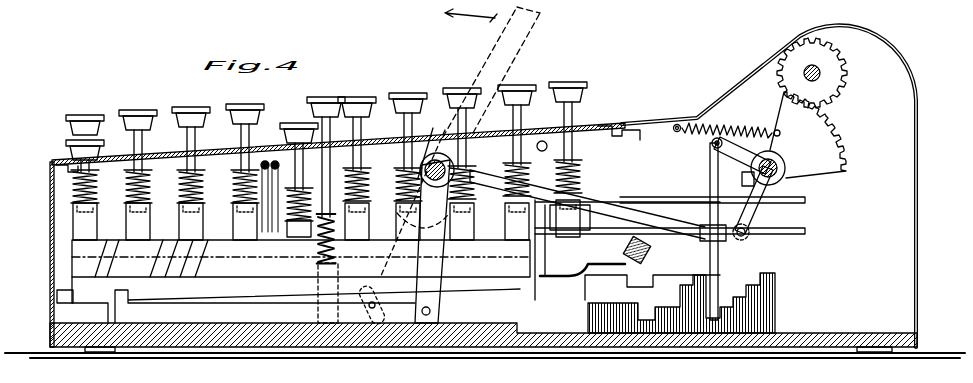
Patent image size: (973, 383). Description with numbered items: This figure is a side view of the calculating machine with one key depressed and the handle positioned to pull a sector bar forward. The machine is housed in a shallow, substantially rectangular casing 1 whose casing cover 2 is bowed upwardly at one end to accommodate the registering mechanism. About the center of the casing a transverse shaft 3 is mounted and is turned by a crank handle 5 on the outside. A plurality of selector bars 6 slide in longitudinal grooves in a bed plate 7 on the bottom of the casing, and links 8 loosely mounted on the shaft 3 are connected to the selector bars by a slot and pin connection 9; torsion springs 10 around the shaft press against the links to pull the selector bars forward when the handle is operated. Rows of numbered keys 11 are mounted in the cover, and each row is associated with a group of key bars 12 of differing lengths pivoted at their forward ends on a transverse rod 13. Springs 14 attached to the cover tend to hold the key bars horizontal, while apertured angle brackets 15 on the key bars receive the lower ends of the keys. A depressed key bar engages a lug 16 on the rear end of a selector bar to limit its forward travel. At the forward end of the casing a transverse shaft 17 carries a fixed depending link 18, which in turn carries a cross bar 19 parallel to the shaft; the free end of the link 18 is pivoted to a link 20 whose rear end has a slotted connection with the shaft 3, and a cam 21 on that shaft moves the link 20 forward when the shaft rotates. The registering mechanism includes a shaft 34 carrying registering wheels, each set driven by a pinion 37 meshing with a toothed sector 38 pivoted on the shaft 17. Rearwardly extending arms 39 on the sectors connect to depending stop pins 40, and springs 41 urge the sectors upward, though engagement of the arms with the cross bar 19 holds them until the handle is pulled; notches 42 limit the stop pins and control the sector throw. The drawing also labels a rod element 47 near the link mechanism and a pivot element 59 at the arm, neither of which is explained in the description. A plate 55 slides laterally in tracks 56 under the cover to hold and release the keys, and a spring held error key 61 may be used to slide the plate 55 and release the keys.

The casing 1 is at (918, 225).
The casing cover 2 is at (872, 34).
The transverse shaft 3 is at (431, 145).
The crank handle 5 is at (512, 62).
The selector bar 6 is at (788, 303).
The bed plate 7 is at (200, 330).
The link 8 is at (410, 226).
The slot and pin connection 9 is at (384, 297).
The torsion spring 10 is at (596, 2).
The key 11 is at (300, 120).
The key bar 12 is at (100, 255).
The transverse rod 13 is at (648, 256).
The spring 14 is at (246, 175).
The apertured angle bracket 15 is at (240, 223).
The lug 16 is at (58, 292).
The transverse shaft 17 is at (785, 167).
The depending link 18 is at (766, 213).
The cross bar 19 is at (744, 181).
The link 20 is at (598, 197).
The cam 21 is at (458, 165).
The shaft 34 is at (822, 75).
The driven pinion 37 is at (832, 92).
The toothed sector 38 is at (822, 172).
The arm 39 is at (737, 150).
The stop pin 40 is at (712, 172).
The spring 41 is at (690, 118).
The notch 42 is at (755, 285).
The rod 47 is at (660, 198).
The plate 55 is at (382, 141).
The track 56 is at (68, 178).
The pivot 59 is at (717, 143).
The error key 61 is at (336, 97).